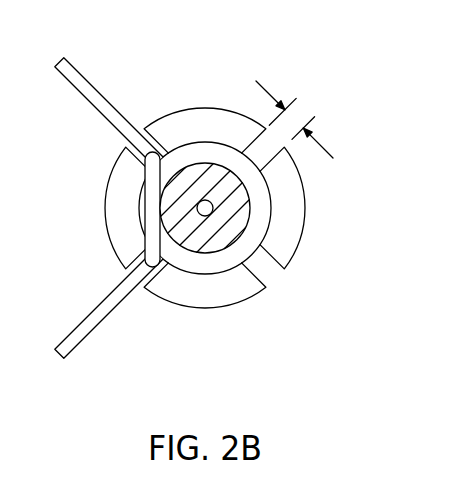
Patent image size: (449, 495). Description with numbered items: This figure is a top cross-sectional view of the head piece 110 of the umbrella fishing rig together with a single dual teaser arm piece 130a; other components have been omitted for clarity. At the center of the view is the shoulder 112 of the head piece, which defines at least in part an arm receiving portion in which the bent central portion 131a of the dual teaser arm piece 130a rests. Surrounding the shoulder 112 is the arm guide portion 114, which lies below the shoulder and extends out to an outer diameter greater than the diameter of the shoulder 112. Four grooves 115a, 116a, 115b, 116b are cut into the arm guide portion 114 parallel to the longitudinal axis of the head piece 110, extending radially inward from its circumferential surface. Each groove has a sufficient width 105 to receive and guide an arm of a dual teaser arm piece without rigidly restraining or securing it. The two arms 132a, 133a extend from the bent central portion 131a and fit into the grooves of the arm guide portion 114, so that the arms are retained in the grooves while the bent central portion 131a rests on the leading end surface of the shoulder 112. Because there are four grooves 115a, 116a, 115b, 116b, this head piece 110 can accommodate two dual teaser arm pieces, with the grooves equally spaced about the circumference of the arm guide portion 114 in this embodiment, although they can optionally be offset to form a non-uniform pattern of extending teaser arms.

The head piece 110 is at (218, 83).
The width 105 is at (262, 87).
The shoulder 112 is at (207, 270).
The arm guide portion 114 is at (88, 225).
The groove 115a is at (137, 298).
The groove 115b is at (272, 280).
The groove 116a is at (143, 117).
The groove 116b is at (296, 118).
The dual teaser arm piece 130a is at (83, 206).
The bent central portion 131a is at (134, 245).
The arm 132a is at (78, 348).
The arm 133a is at (85, 73).